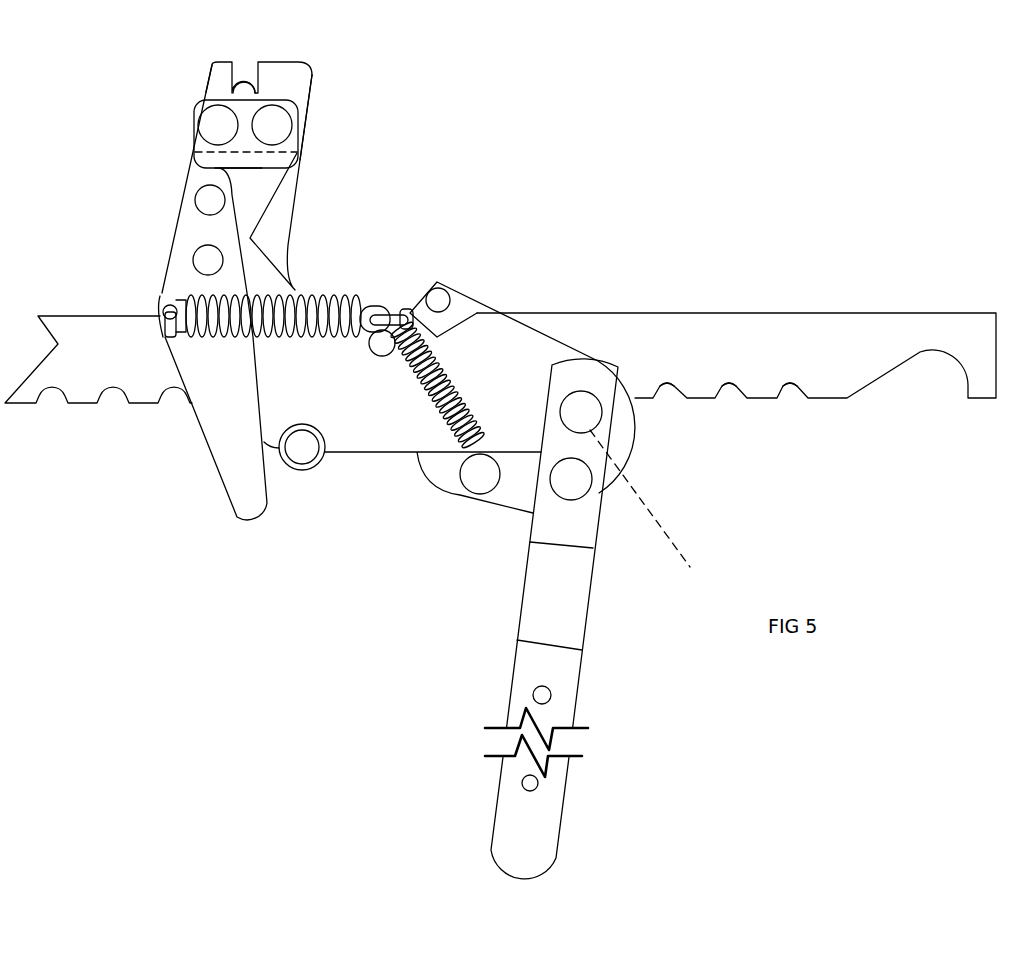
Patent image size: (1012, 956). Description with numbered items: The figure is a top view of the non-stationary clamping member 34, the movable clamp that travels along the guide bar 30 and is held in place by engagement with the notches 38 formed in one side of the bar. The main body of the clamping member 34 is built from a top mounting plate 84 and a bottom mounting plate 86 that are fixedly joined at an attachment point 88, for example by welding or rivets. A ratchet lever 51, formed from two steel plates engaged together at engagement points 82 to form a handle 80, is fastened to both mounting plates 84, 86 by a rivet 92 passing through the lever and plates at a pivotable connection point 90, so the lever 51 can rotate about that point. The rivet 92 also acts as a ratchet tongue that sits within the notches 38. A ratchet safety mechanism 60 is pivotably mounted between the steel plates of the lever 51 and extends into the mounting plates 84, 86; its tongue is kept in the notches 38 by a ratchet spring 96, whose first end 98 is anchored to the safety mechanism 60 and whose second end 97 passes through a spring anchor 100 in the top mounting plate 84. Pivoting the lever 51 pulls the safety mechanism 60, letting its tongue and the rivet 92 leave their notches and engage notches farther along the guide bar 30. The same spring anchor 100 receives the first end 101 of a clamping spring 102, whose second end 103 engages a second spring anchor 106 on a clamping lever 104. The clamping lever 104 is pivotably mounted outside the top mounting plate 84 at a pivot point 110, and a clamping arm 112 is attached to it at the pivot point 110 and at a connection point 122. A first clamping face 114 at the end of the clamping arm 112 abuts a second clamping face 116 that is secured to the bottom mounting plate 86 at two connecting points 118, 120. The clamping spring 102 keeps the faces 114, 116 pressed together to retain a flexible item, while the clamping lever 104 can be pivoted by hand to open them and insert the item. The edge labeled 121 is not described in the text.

The guide bar 30 is at (707, 313).
The non-stationary clamping member 34 is at (444, 133).
The notches 38 is at (787, 387).
The ratchet lever 51 is at (576, 707).
The ratchet safety mechanism 60 is at (460, 498).
The handle 80 is at (448, 706).
The engagement points 82 is at (522, 788).
The top mounting plate 84 is at (460, 287).
The bottom mounting plate 86 is at (211, 66).
The attachment point 88 is at (310, 467).
The pivotable connection point 90 is at (580, 437).
The rivet 92 is at (693, 567).
The ratchet spring 96 is at (443, 373).
The second end 97 is at (471, 298).
The first end 98 is at (498, 455).
The spring anchor 100 is at (393, 313).
The first end 101 is at (374, 303).
The clamping spring 102 is at (281, 293).
The second end 103 is at (157, 307).
The clamping lever 104 is at (220, 497).
The second spring anchor 106 is at (160, 297).
The pivot point 110 is at (196, 250).
The clamping arm 112 is at (263, 218).
The first clamping face 114 is at (280, 156).
The second clamping face 116 is at (303, 165).
The connecting point 118 is at (240, 97).
The connecting point 120 is at (249, 118).
The plate lower edge 121 is at (265, 173).
The connection point 122 is at (194, 192).